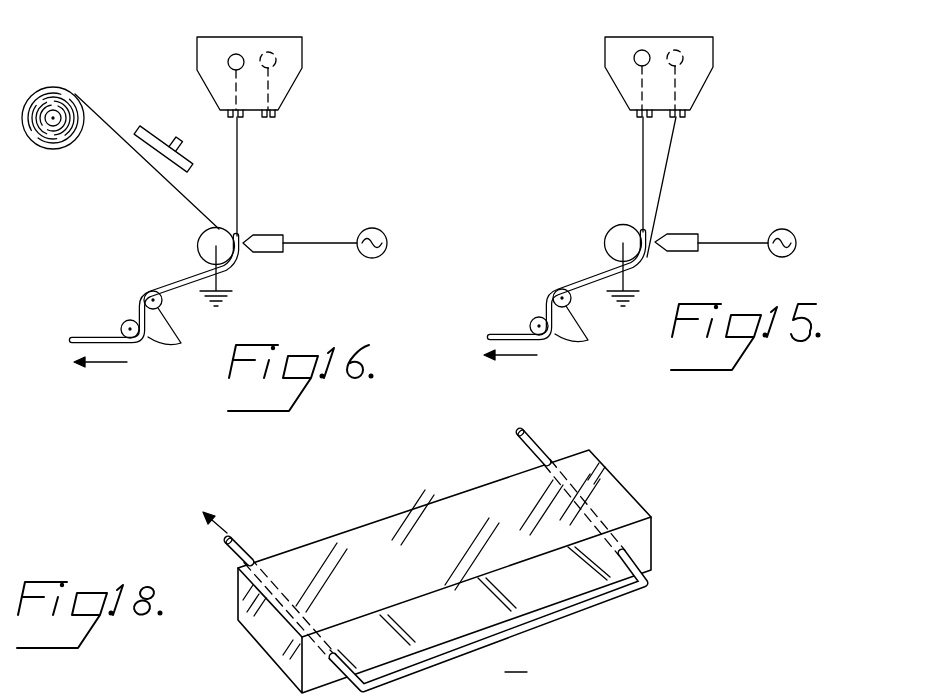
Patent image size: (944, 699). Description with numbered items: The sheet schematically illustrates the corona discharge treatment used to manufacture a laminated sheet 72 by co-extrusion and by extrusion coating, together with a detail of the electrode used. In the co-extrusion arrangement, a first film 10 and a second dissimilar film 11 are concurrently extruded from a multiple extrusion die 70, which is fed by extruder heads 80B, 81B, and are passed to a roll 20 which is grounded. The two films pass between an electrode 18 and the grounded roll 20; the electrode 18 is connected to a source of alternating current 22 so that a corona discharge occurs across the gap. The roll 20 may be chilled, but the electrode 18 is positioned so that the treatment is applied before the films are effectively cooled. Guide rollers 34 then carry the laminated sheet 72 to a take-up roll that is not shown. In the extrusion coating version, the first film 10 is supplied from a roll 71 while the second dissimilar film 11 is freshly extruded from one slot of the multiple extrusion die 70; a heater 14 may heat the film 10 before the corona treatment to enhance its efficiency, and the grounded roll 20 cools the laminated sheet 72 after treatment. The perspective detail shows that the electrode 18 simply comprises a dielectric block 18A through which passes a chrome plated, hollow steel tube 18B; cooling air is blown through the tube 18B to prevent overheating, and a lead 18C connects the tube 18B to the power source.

In FIG. 16, the first film 10 is at (104, 117).
In FIG. 15, the first film 10 is at (642, 148).
In FIG. 16, the second dissimilar film 11 is at (238, 170).
In FIG. 15, the second dissimilar film 11 is at (670, 155).
In FIG. 16, the heater 14 is at (156, 132).
In FIG. 16, the electrode 18 is at (264, 254).
In FIG. 15, the electrode 18 is at (677, 252).
In FIG. 18, the dielectric block 18A is at (401, 545).
In FIG. 18, the hollow steel tube 18B is at (578, 607).
In FIG. 18, the lead 18C is at (230, 561).
In FIG. 16, the grounded roll 20 is at (197, 240).
In FIG. 15, the grounded roll 20 is at (606, 230).
In FIG. 16, the source of alternating current 22 is at (372, 259).
In FIG. 15, the source of alternating current 22 is at (793, 232).
In FIG. 16, the guide rollers 34 is at (165, 324).
In FIG. 15, the guide rollers 34 is at (572, 319).
In FIG. 16, the multiple extrusion die 70 is at (248, 62).
In FIG. 15, the multiple extrusion die 70 is at (664, 61).
In FIG. 16, the roll 71 is at (52, 128).
In FIG. 16, the laminated sheet 72 is at (170, 280).
In FIG. 15, the laminated sheet 72 is at (573, 280).
In FIG. 16, the extruder head 80B is at (228, 60).
In FIG. 15, the extruder head 80B is at (633, 63).
In FIG. 16, the extruder head 81B is at (287, 65).
In FIG. 15, the extruder head 81B is at (683, 55).